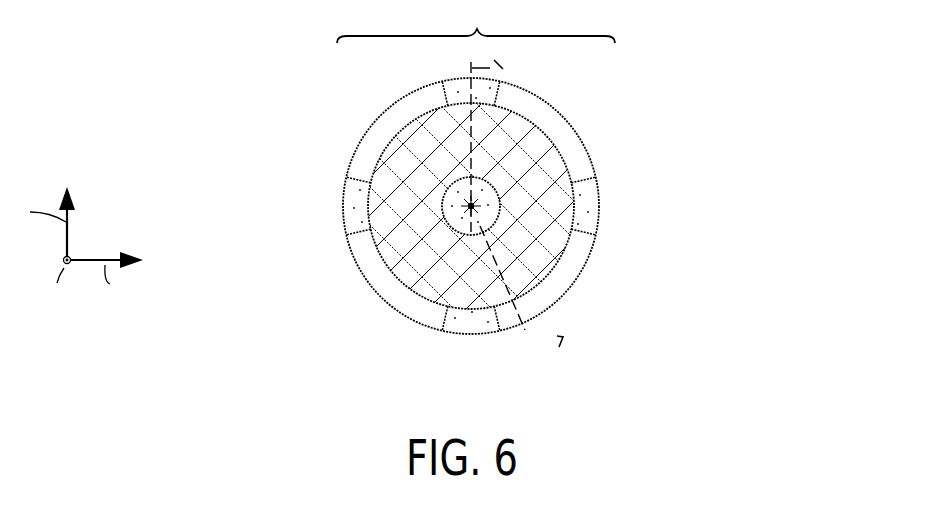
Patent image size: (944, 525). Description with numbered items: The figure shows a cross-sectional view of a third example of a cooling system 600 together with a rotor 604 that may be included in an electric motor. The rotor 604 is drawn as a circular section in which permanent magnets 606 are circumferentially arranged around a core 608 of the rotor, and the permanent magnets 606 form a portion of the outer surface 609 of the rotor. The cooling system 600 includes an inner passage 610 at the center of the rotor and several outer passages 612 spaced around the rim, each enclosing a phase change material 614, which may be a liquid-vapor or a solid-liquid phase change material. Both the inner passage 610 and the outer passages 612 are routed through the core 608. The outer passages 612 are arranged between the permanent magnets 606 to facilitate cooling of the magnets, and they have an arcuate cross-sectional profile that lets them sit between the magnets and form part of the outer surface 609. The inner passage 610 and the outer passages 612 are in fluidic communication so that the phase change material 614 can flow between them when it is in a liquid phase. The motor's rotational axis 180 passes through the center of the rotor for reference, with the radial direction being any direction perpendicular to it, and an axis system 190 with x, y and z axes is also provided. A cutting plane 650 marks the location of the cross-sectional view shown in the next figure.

The axis system 190 is at (110, 219).
The cooling system 600 is at (500, 255).
The rotor 604 is at (476, 23).
The permanent magnets 606 is at (371, 126).
The core 608 is at (518, 174).
The outer surface 609 is at (584, 272).
The inner passage 610 is at (513, 199).
The outer passages 612 is at (614, 192).
The phase change material 614 is at (592, 216).
The rotational axis 180 is at (468, 206).
The cutting plane 650 is at (553, 335).